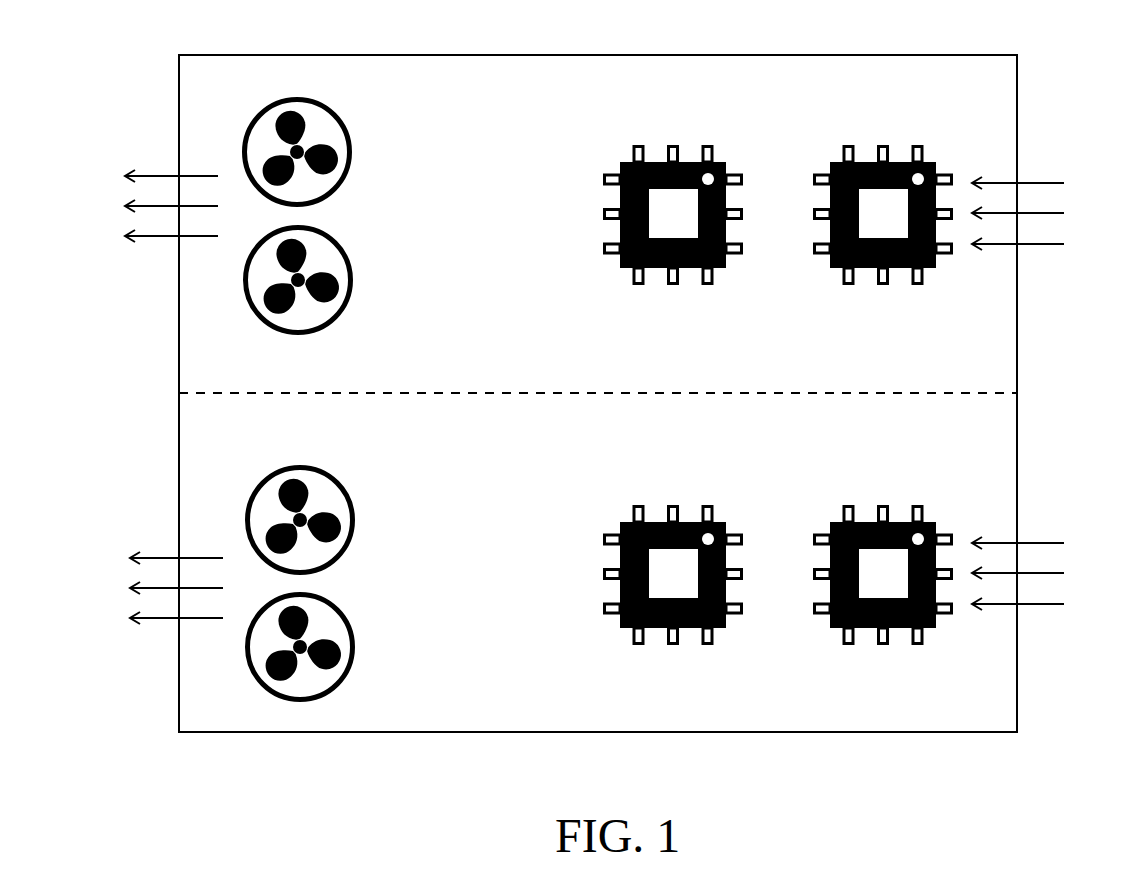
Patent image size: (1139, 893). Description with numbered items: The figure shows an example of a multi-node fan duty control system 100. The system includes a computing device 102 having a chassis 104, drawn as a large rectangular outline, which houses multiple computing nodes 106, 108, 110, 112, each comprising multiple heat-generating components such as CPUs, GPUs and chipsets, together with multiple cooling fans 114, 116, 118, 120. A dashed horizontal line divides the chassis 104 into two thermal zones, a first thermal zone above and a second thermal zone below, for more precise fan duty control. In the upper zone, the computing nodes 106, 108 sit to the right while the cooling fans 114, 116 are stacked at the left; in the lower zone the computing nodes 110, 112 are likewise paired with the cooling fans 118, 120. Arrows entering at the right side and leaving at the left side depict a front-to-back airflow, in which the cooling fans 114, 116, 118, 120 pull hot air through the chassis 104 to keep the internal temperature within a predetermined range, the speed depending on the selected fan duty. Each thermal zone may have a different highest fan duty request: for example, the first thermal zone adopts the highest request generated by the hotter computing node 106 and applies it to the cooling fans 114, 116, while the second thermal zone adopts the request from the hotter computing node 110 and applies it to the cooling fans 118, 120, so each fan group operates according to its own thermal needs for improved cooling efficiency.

The multi-node fan duty control system 100 is at (1057, 88).
The computing device 102 is at (1018, 430).
The chassis 104 is at (988, 707).
The computing node 106 is at (688, 327).
The computing node 108 is at (902, 327).
The computing node 110 is at (688, 689).
The computing node 112 is at (898, 689).
The cooling fan 114 is at (402, 166).
The cooling fan 116 is at (402, 286).
The cooling fan 118 is at (402, 539).
The cooling fan 120 is at (402, 664).